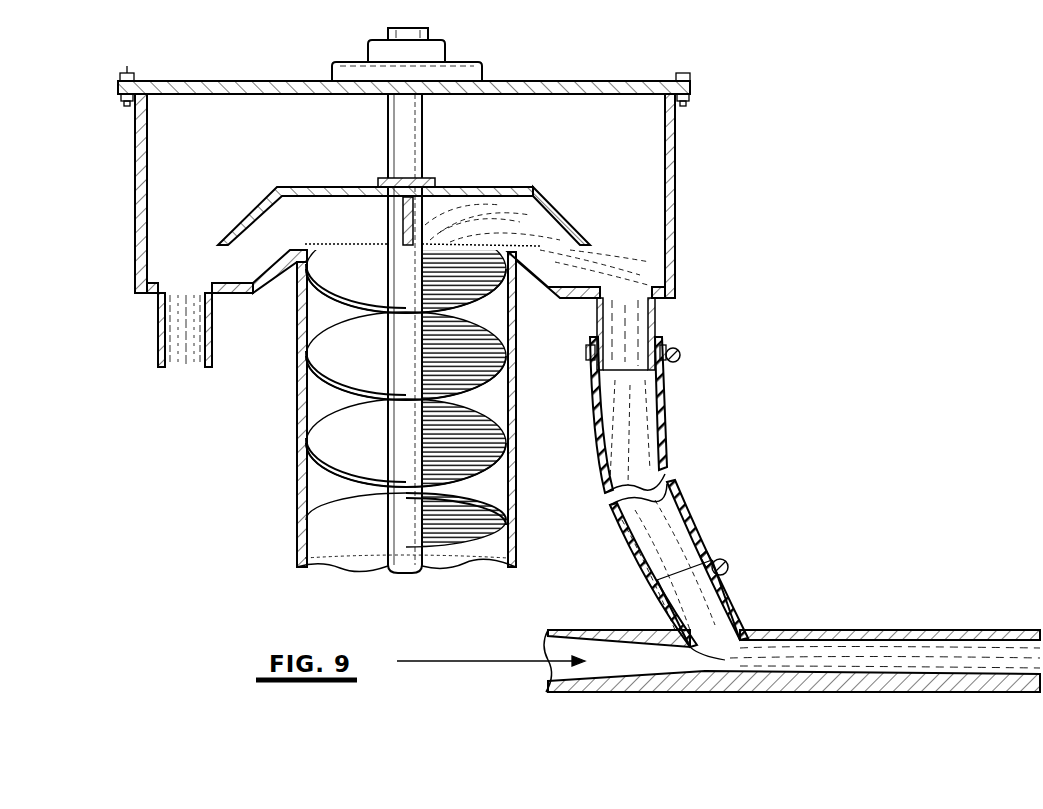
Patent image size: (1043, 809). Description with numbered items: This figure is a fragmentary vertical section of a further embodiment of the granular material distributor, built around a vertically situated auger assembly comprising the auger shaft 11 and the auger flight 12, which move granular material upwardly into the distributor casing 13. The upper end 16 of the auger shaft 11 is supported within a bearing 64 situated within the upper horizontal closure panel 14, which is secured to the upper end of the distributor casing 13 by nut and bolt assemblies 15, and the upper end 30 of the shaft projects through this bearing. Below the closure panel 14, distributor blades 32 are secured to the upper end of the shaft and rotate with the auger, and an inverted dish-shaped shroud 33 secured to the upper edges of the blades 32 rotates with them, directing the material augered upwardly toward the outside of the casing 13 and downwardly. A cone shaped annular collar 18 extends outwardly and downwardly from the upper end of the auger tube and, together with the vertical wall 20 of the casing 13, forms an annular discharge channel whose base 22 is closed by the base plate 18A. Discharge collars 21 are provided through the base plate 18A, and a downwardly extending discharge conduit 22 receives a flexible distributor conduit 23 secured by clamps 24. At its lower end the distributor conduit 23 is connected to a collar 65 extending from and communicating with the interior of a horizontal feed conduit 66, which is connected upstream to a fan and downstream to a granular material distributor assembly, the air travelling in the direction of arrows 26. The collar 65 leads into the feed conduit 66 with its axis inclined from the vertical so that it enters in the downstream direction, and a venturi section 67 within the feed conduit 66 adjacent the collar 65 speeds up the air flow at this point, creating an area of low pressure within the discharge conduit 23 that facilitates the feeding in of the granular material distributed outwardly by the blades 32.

The auger shaft 11 is at (398, 333).
The auger flight 12 is at (352, 410).
The distributor casing 13 is at (675, 200).
The horizontal closure panel 14 is at (565, 83).
The nut and bolt assemblies 15 is at (128, 74).
The upper end of the auger shaft 16 is at (398, 113).
The cone shaped annular collar 18 is at (278, 262).
The base plate 18A is at (228, 298).
The vertical wall 20 is at (135, 215).
The discharge collar 21 is at (178, 321).
The discharge conduit 22 is at (160, 255).
The flexible conduit portion 23 is at (668, 428).
The clamps 24 is at (680, 355).
The arrows 26 is at (433, 660).
The upper end of the auger shaft 30 is at (422, 31).
The distributor blades 32 is at (318, 205).
The inverted dish-shaped shroud 33 is at (548, 205).
The bearing 64 is at (480, 70).
The collar 65 is at (735, 620).
The horizontal feed conduit 66 is at (840, 630).
The venturi section 67 is at (712, 650).